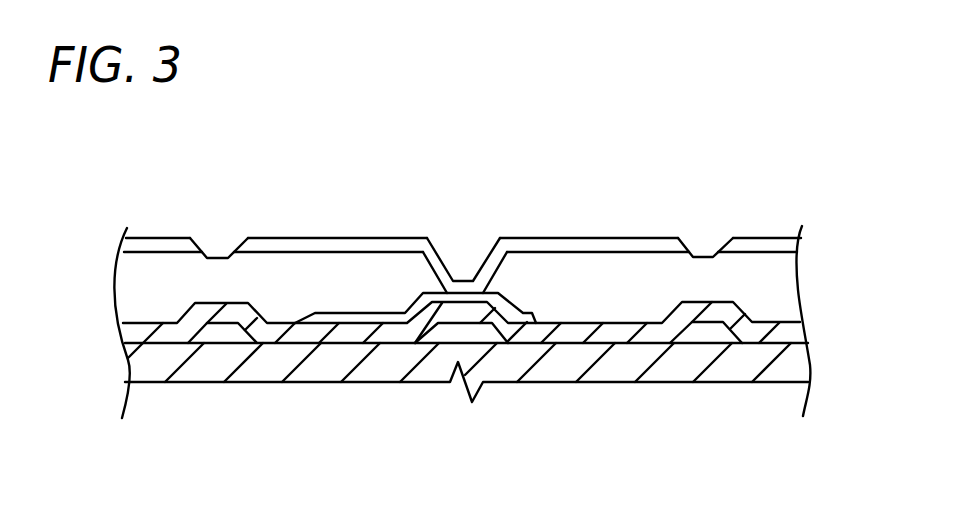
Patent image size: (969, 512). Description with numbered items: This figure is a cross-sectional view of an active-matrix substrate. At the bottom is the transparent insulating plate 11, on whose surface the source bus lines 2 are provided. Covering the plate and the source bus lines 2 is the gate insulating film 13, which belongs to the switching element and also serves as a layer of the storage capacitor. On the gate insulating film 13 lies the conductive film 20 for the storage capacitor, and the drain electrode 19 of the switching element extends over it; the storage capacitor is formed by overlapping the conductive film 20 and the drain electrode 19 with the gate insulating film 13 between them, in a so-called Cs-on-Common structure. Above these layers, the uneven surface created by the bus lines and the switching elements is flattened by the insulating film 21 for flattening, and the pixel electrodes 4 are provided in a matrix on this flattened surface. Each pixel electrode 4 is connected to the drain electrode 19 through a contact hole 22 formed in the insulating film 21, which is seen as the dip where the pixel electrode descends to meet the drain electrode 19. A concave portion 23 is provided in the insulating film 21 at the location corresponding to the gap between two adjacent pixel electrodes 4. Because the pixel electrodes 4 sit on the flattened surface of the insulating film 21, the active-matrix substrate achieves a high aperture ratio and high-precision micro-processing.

The source bus line 2 is at (222, 333).
The pixel electrode 4 is at (153, 237).
The transparent insulating plate 11 is at (310, 370).
The gate insulating film 13 is at (140, 335).
The drain electrode 19 is at (388, 315).
The conductive film for the storage capacitor 20 is at (482, 330).
The insulating film for flattening 21 is at (140, 285).
The contact hole 22 is at (496, 260).
The concave portion 23 is at (220, 256).